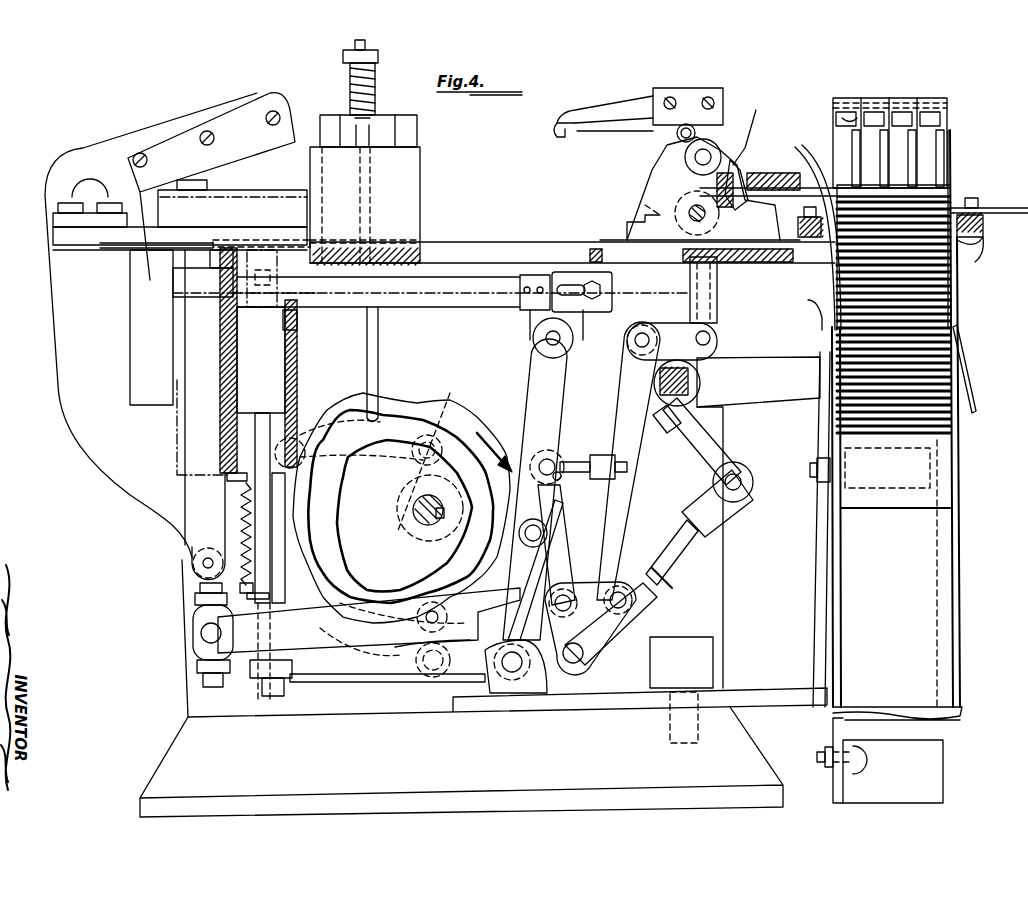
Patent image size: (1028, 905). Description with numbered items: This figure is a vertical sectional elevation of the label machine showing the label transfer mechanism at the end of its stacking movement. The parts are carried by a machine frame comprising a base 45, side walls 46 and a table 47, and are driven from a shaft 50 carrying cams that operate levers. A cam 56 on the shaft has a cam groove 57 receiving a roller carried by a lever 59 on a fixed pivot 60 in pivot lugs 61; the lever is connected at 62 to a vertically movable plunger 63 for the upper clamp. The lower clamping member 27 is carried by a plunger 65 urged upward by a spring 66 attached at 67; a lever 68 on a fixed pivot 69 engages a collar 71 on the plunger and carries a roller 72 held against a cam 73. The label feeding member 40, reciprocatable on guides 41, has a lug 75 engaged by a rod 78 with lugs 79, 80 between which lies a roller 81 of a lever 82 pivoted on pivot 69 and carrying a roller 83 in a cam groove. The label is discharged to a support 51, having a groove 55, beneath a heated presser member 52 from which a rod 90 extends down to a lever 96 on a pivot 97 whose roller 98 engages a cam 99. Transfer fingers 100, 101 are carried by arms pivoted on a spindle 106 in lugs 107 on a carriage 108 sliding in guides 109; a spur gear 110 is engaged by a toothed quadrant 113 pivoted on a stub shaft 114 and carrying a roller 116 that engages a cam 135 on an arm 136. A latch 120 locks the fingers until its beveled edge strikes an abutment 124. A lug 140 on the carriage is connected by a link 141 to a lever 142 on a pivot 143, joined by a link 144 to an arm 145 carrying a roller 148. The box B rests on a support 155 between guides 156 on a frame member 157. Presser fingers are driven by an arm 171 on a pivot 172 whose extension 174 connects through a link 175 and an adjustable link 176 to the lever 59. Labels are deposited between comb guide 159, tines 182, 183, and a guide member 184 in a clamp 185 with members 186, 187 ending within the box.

The lower clamping member 27 is at (235, 250).
The label feeding member 40 is at (267, 243).
The guides 41 is at (150, 248).
The base 45 is at (178, 740).
The side walls 46 is at (185, 690).
The table 47 is at (170, 290).
The shaft 50 is at (412, 520).
The support 51 is at (325, 300).
The presser member 52 is at (422, 170).
The longitudinal groove 55 is at (383, 247).
The cam 56 is at (401, 508).
The cam groove 57 is at (330, 522).
The lever 59 is at (322, 650).
The fixed pivot 60 is at (566, 568).
The pivot lugs 61 is at (590, 658).
The connection 62 is at (200, 633).
The plunger 63 is at (195, 520).
The plunger 65 is at (268, 555).
The spring 66 is at (240, 493).
The spring connection 67 is at (262, 592).
The lever 68 is at (350, 675).
The fixed pivot 69 is at (508, 680).
The collar 71 is at (252, 680).
The roller 72 is at (412, 660).
The cam 73 is at (450, 662).
The lug 75 is at (240, 281).
The rod 78 is at (452, 307).
The lug 79 is at (532, 340).
The lug 80 is at (584, 322).
The roller 81 is at (522, 318).
The lever 82 is at (535, 368).
The roller 83 is at (520, 525).
The vertical rod 90 is at (380, 355).
The lever 96 is at (312, 430).
The fixed pivot 97 is at (287, 470).
The roller 98 is at (450, 405).
The cam 99 is at (420, 465).
The transfer finger 100 is at (812, 238).
The transfer finger 101 is at (795, 186).
The spindle 106 is at (690, 208).
The lugs 107 is at (668, 165).
The carriage 108 is at (735, 262).
The guides 109 is at (532, 242).
The spur gear 110 is at (645, 206).
The toothed quadrant 113 is at (740, 160).
The stub shaft 114 is at (745, 120).
The roller 116 is at (653, 130).
The latch 120 is at (733, 180).
The abutment 124 is at (770, 190).
The cam 135 is at (556, 124).
The arm 136 is at (612, 108).
The lug 140 is at (690, 290).
The link 141 is at (675, 320).
The lever 142 is at (625, 365).
The fixed pivot 143 is at (575, 665).
The link 144 is at (576, 462).
The arm 145 is at (680, 138).
The roller 148 is at (548, 533).
The support 155 is at (918, 735).
The guides 156 is at (935, 756).
The frame member 157 is at (818, 510).
The guide 159 is at (928, 148).
The arm 171 is at (768, 398).
The pivot 172 is at (682, 398).
The extension 174 is at (665, 432).
The link 175 is at (698, 460).
The adjustable link 176 is at (668, 555).
The tines 182 is at (815, 152).
The guide tines 183 is at (833, 265).
The guide member 184 is at (1005, 208).
The clamp 185 is at (975, 198).
The upwardly extending members 186 is at (950, 160).
The downwardly extending members 187 is at (953, 265).
The box B is at (962, 548).